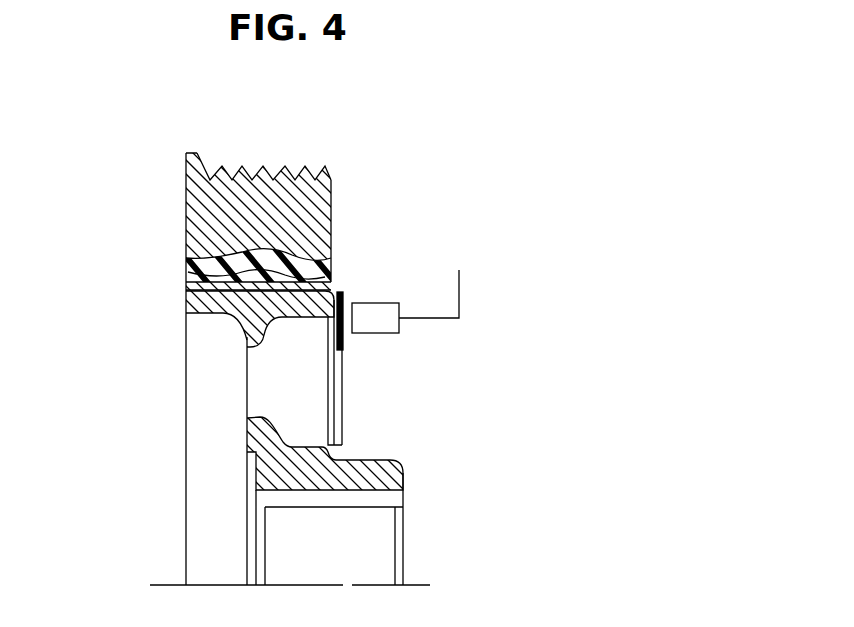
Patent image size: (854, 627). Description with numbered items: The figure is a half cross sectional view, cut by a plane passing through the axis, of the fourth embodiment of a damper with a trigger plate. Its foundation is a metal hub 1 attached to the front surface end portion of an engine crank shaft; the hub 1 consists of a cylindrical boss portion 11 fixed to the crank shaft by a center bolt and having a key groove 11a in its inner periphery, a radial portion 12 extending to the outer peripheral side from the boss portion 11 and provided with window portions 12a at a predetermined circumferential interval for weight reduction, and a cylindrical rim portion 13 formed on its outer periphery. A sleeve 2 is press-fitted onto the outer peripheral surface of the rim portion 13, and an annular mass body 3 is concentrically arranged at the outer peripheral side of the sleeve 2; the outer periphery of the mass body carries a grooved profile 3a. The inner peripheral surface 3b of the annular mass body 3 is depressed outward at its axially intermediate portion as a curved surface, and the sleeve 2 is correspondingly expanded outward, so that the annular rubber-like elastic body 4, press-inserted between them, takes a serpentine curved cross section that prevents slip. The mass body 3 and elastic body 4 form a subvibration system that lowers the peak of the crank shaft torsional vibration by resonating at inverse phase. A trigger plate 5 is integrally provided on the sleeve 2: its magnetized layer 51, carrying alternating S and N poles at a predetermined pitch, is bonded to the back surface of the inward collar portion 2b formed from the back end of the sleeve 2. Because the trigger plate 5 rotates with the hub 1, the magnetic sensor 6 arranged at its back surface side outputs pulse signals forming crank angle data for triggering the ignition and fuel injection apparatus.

The hub 1 is at (237, 441).
The sleeve 2 is at (233, 305).
The inward collar portion 2b is at (326, 338).
The annular mass body 3 is at (307, 216).
The belt teeth / grooves 3a is at (252, 176).
The inner peripheral surface 3b is at (186, 222).
The elastic body 4 is at (188, 268).
The trigger plate 5 is at (349, 289).
The magnetized layer 51 is at (343, 318).
The magnetic sensor 6 is at (385, 308).
The boss portion 11 is at (385, 472).
The key groove 11a is at (340, 497).
The radial portion 12 is at (247, 340).
The window portions 12a is at (262, 384).
The rim portion 13 is at (193, 302).